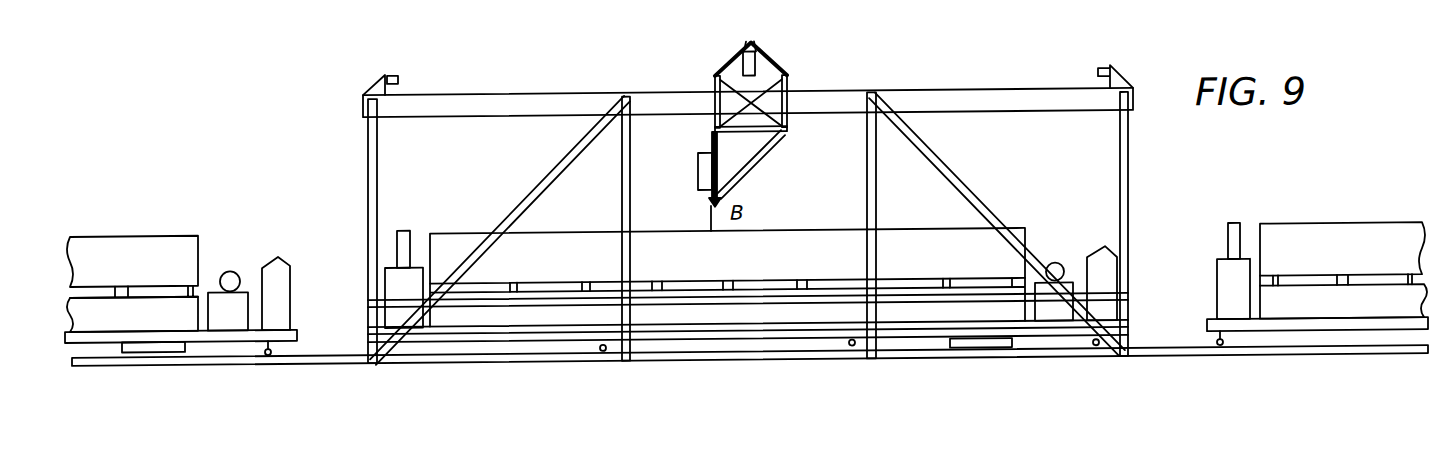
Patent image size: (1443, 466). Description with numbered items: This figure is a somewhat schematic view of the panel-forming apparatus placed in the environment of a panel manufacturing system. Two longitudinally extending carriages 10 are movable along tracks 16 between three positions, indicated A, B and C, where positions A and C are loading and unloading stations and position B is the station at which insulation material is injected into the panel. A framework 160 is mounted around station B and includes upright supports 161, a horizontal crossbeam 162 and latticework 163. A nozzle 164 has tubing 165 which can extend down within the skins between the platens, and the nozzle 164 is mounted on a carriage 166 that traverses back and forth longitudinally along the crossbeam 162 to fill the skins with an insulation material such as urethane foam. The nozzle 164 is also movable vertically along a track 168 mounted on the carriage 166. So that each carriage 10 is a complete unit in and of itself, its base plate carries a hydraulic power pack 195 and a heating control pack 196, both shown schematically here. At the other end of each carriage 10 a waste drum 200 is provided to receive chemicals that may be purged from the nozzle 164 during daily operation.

The carriage 10 is at (164, 224).
The track 16 is at (1150, 354).
The framework 160 is at (775, 193).
The upright supports 161 is at (380, 179).
The horizontal crossbeam 162 is at (483, 103).
The latticework 163 is at (568, 151).
The nozzle 164 is at (700, 157).
The tubing 165 is at (708, 211).
The carriage 166 is at (713, 126).
The track 168 is at (716, 125).
The hydraulic power pack 195 is at (287, 268).
The heating control pack 196 is at (228, 268).
The waste drum 200 is at (1222, 274).